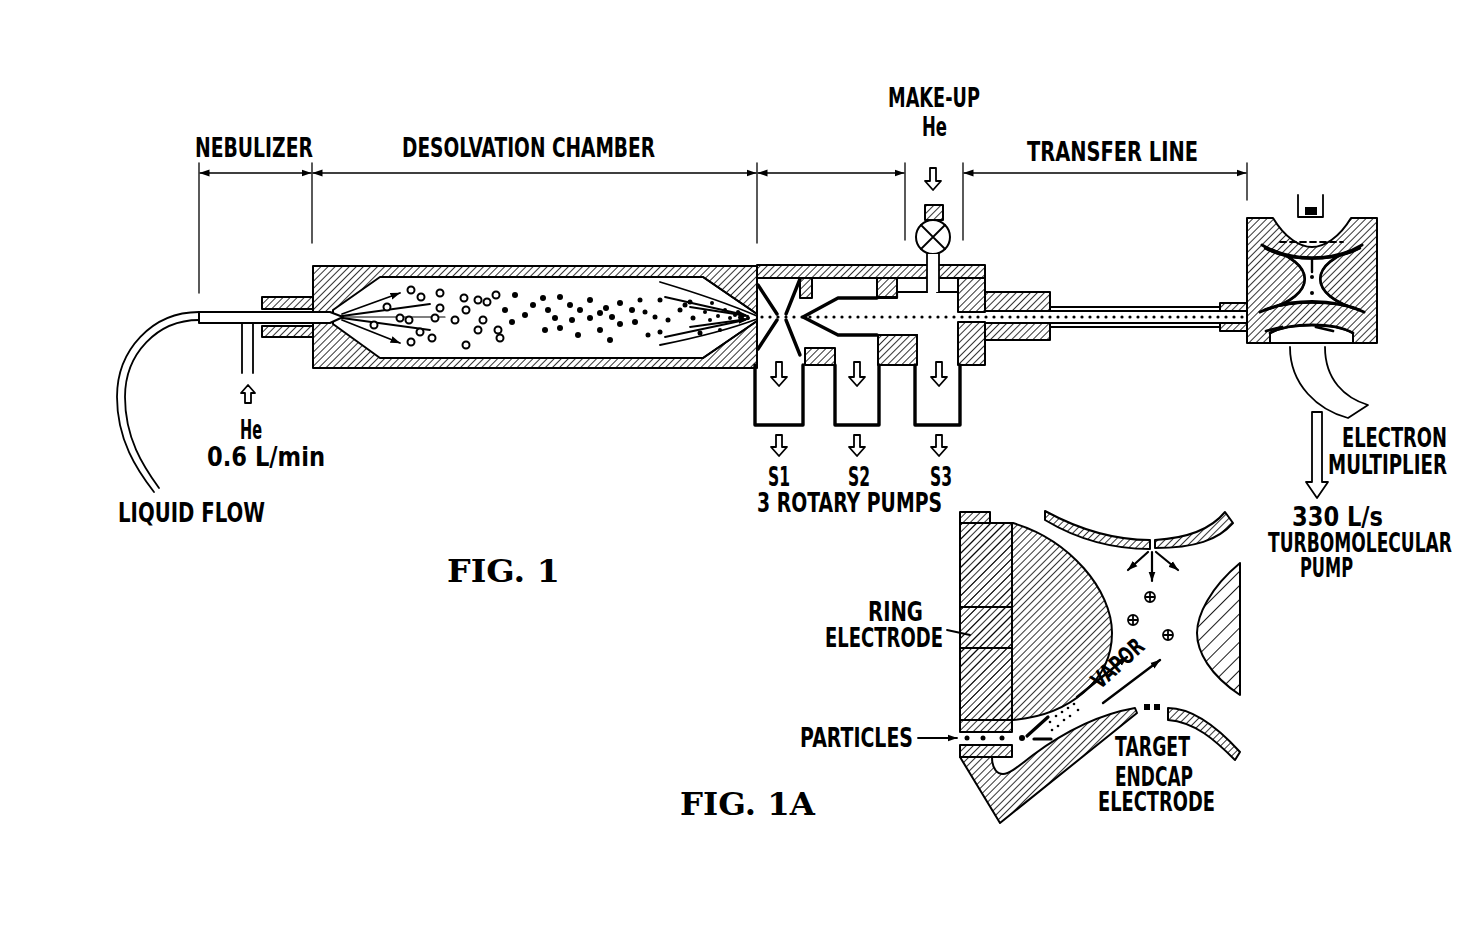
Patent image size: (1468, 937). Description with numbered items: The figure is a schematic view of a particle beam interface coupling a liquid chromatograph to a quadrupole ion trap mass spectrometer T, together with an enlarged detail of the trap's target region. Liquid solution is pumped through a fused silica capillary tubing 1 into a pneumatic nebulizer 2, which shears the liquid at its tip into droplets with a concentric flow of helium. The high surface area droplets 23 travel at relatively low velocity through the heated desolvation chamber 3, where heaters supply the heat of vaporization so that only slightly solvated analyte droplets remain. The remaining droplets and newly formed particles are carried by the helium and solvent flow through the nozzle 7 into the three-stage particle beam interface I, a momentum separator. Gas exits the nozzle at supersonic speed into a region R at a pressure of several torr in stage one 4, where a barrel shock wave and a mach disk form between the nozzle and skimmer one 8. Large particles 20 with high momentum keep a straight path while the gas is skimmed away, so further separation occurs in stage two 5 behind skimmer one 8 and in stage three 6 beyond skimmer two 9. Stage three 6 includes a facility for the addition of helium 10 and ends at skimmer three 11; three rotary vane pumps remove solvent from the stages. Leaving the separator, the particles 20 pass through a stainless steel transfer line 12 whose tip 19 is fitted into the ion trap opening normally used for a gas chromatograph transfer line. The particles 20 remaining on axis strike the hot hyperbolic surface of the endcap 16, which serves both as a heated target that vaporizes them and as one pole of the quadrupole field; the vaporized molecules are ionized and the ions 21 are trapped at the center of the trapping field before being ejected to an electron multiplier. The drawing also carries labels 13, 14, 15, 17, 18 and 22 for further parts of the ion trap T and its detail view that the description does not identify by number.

In FIG. 1, the fused silica capillary tubing 1 is at (128, 470).
In FIG. 1, the pneumatic nebulizer 2 is at (262, 348).
In FIG. 1, the desolvation chamber 3 is at (535, 326).
In FIG. 1, the stage one 4 is at (809, 343).
In FIG. 1, the stage two 5 is at (794, 367).
In FIG. 1, the stage three 6 is at (947, 333).
In FIG. 1, the nozzle 7 is at (712, 368).
In FIG. 1, the skimmer one 8 is at (790, 330).
In FIG. 1, the skimmer two 9 is at (816, 333).
In FIG. 1, the helium 10 is at (936, 300).
In FIG. 1, the skimmer three 11 is at (973, 263).
In FIG. 1, the transfer line 12 is at (1105, 307).
In FIG. 1, the electron filament 13 is at (1328, 203).
In FIG. 1, the entrance endcap electrode 14 is at (1377, 223).
In FIG. 1, the ring electrode 15 is at (1346, 292).
In FIG. 1, the endcap 16 is at (1377, 340).
In FIG. 1, the electron multiplier channel 17 is at (1312, 402).
In FIG. 1A, the ring electrode 18 is at (967, 693).
In FIG. 1A, the tip 19 is at (983, 750).
In FIG. 1, the particles 20 is at (1087, 315).
In FIG. 1A, the particles 20 is at (1037, 742).
In FIG. 1A, the ions 21 is at (1175, 637).
In FIG. 1A, the ion 22 is at (1160, 592).
In FIG. 1, the droplets 23 is at (458, 323).
In FIG. 1, the region R is at (748, 372).
In FIG. 1, the three-stage particle beam interface I is at (813, 102).
In FIG. 1, the quadrupole ion trap mass spectrometer T is at (1317, 123).